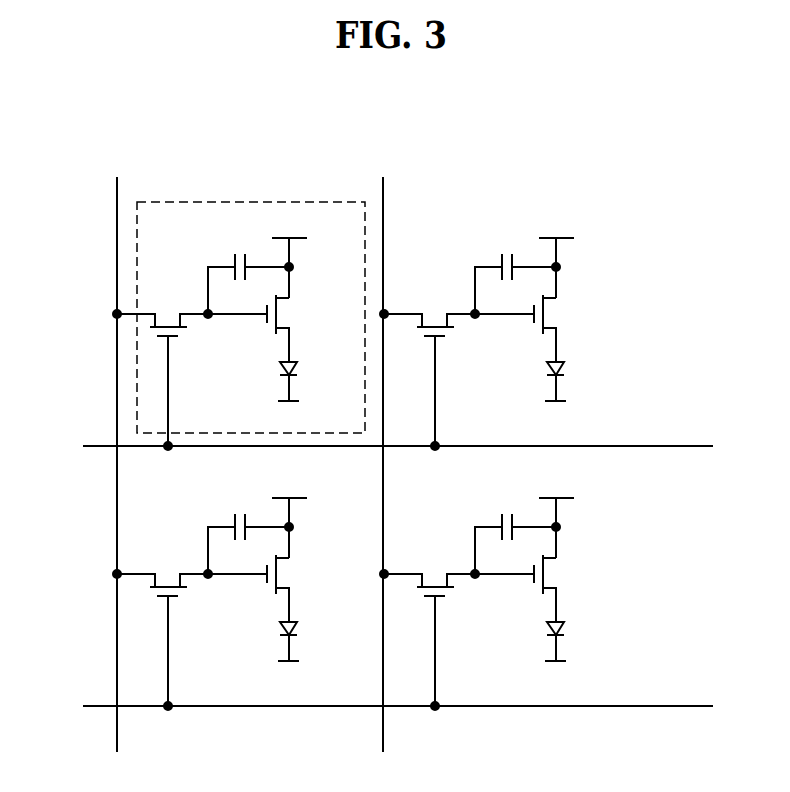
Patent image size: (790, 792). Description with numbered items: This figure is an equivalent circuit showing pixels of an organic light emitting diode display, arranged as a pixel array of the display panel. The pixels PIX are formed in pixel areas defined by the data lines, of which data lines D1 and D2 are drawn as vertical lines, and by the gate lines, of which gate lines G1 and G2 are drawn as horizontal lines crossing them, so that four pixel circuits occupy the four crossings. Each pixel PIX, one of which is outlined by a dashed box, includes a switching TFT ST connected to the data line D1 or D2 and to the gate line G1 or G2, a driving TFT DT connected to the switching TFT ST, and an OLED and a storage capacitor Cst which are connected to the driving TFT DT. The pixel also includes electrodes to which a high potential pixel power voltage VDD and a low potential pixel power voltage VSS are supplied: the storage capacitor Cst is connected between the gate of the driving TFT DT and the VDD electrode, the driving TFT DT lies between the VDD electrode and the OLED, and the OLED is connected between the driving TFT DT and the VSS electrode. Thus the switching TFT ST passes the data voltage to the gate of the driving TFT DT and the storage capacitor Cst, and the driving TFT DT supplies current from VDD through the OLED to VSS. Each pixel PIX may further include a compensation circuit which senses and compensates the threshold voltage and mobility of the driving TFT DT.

The data line D1 is at (116, 448).
The data line D2 is at (382, 448).
The gate line G1 is at (384, 447).
The gate line G2 is at (384, 707).
The pixel PIX is at (243, 202).
The high potential pixel power voltage VDD is at (422, 383).
The storage capacitor Cst is at (380, 401).
The driving TFT DT is at (396, 458).
The switching TFT ST is at (294, 510).
The organic light emitting diode OLED is at (451, 508).
The low potential pixel power voltage VSS is at (422, 547).